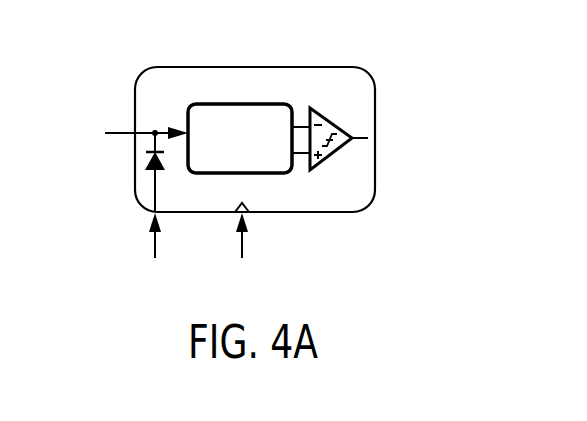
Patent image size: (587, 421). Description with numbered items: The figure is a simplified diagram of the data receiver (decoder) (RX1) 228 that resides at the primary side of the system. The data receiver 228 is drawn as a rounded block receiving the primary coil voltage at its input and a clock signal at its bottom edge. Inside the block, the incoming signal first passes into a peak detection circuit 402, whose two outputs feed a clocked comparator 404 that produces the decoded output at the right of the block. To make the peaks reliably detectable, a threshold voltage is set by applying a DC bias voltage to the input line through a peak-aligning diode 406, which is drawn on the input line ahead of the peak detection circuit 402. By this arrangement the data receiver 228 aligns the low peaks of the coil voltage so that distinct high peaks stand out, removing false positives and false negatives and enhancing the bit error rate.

The data receiver (decoder) (RX1) 228 is at (372, 70).
The peak detection circuit 402 is at (260, 160).
The clocked comparator 404 is at (328, 158).
The peak-aligning diode 406 is at (147, 160).